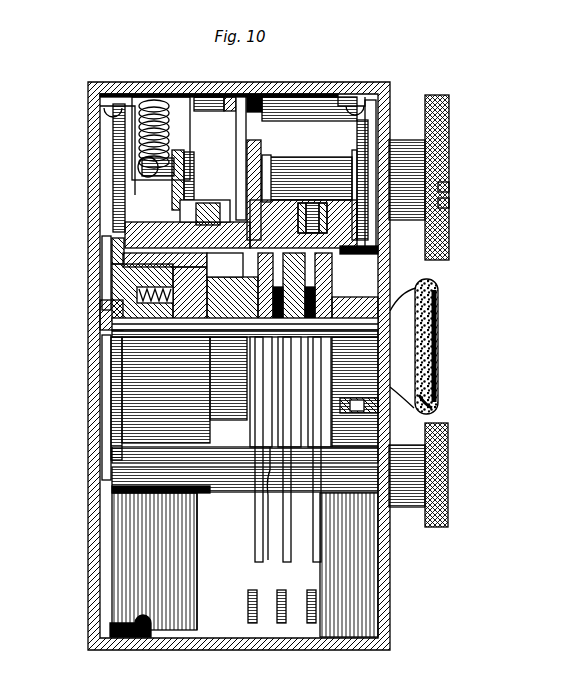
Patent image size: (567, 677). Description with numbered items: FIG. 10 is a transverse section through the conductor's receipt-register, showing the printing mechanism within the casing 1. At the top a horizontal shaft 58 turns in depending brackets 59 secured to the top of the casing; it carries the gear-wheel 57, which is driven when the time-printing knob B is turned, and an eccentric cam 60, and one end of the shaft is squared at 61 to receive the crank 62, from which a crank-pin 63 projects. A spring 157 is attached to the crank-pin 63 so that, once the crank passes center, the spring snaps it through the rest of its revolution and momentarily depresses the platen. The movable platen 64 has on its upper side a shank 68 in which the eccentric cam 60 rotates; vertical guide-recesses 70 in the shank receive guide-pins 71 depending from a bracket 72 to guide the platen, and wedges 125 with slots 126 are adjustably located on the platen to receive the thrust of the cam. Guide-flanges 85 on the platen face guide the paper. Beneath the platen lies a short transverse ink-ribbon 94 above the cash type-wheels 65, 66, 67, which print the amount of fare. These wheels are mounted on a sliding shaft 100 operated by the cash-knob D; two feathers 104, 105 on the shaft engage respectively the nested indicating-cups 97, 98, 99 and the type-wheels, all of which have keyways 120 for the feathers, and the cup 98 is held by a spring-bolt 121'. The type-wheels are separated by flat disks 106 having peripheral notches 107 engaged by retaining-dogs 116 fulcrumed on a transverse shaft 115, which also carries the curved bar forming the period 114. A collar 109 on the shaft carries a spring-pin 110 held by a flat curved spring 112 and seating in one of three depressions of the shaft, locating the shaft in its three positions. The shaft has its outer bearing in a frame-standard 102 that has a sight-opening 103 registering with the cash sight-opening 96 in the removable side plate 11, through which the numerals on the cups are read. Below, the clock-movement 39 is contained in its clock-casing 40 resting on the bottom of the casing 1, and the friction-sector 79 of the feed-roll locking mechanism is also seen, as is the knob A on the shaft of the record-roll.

The casing 1 is at (376, 88).
The depending brackets 59 is at (160, 103).
The bracket 72 is at (241, 135).
The guide-pins 71 is at (258, 100).
The spring 157 is at (148, 124).
The friction-sector 79 is at (113, 149).
The crank-pin 63 is at (142, 167).
The crank 62 is at (178, 158).
The squared portion 61 is at (180, 191).
The shank 68 is at (252, 150).
The eccentric cam 60 is at (285, 175).
The vertical guide-recesses 70 is at (250, 203).
The gear-wheel 57 is at (357, 130).
The horizontal shaft 58 is at (355, 167).
The movable platen 64 is at (268, 240).
The knob B is at (450, 163).
The wedges 125 is at (448, 189).
The slots 126 is at (448, 205).
The short ribbon 94 is at (389, 252).
The outer indicating-cup 97 is at (102, 248).
The sight-opening 103 is at (118, 256).
The guide-flanges 85 is at (120, 267).
The indicating-cup 98 is at (138, 291).
The inner indicating-cup 99 is at (110, 297).
The cash sight-opening 96 is at (110, 306).
The cash type-wheel 65 is at (262, 268).
The cash type-wheel 66 is at (318, 268).
The cash type-wheel 67 is at (318, 283).
The collar 109 is at (353, 320).
The cash-knob D is at (440, 340).
The keyways 120 is at (428, 284).
The spring-pin 110 is at (438, 386).
The sliding shaft 100 is at (125, 334).
The spring-bolt 121' is at (192, 358).
The feather 104 is at (190, 322).
The flat disks 106 is at (256, 343).
The peripheral notches 107 is at (256, 354).
The feather 105 is at (325, 324).
The flat curved spring 112 is at (345, 412).
The removable side plate 11 is at (112, 456).
The knob A is at (450, 476).
The frame-standard 102 is at (112, 488).
The transverse shaft 115 is at (176, 488).
The period 114 is at (273, 472).
The clock-casing 40 is at (124, 545).
The clock-movement 39 is at (287, 565).
The retaining-dogs 116 is at (312, 577).